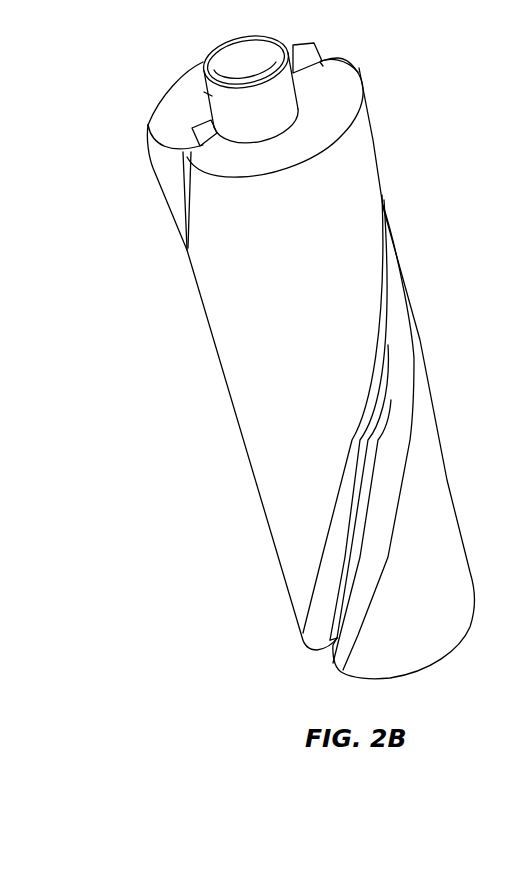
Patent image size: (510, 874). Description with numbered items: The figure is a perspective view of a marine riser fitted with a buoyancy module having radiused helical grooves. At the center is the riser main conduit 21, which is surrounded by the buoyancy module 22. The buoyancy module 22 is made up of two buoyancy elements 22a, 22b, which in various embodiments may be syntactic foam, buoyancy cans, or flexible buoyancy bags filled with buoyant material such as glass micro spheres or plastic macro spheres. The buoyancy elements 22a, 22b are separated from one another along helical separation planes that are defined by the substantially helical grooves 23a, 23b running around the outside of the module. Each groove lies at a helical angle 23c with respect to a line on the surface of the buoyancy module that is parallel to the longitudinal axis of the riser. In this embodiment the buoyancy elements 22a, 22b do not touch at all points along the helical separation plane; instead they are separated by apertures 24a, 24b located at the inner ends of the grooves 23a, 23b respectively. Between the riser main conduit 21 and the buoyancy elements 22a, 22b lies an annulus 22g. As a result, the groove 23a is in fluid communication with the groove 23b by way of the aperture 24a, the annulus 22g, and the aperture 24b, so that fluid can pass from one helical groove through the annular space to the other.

The riser main conduit 21 is at (225, 47).
The buoyancy module 22 is at (249, 697).
The buoyancy element 22a is at (184, 88).
The buoyancy element 22b is at (343, 93).
The annulus 22g is at (210, 110).
The helical groove 23a is at (322, 62).
The helical groove 23b is at (171, 170).
The helical angle 23c is at (367, 428).
The aperture 24a is at (293, 50).
The aperture 24b is at (150, 127).